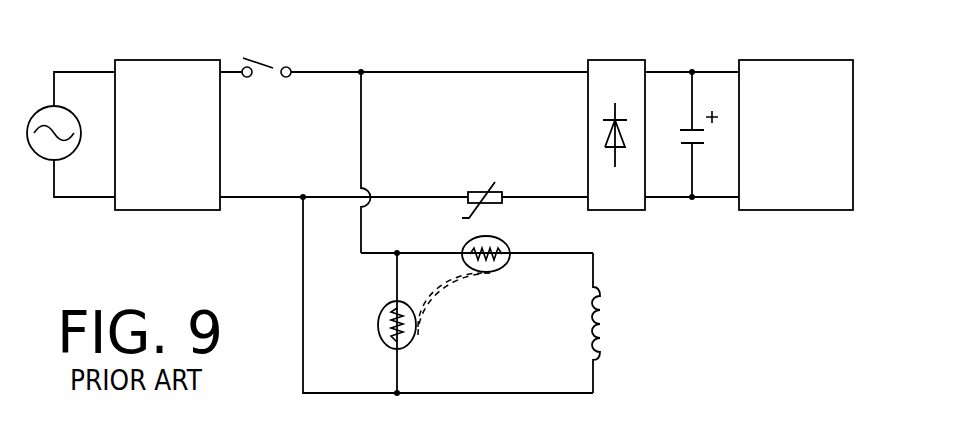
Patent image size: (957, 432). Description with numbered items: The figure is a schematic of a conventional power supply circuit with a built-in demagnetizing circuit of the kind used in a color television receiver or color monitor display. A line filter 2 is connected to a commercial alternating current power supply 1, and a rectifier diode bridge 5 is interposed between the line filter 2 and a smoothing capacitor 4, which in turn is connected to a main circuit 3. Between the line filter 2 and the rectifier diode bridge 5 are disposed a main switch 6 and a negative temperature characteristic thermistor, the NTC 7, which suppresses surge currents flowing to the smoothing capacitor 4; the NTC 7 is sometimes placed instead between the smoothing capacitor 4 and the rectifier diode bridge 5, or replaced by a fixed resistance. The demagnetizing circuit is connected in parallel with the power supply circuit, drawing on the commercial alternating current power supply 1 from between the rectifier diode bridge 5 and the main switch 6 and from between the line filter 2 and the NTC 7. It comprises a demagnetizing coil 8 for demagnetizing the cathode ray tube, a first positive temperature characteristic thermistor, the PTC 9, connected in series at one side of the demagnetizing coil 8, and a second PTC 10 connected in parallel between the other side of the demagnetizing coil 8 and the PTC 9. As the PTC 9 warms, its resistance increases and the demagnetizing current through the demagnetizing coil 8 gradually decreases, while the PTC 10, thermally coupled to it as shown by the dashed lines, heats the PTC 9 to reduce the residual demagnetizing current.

The commercial alternating current power supply 1 is at (50, 107).
The line filter 2 is at (192, 58).
The main circuit 3 is at (767, 59).
The smoothing capacitor 4 is at (687, 127).
The rectifier diode bridge 5 is at (615, 58).
The main switch 6 is at (274, 66).
The negative temperature characteristic thermistor (NTC) 7 is at (478, 190).
The demagnetizing coil 8 is at (600, 310).
The first positive temperature characteristic thermistor (PTC) 9 is at (500, 272).
The second positive temperature characteristic thermistor (PTC) 10 is at (382, 338).